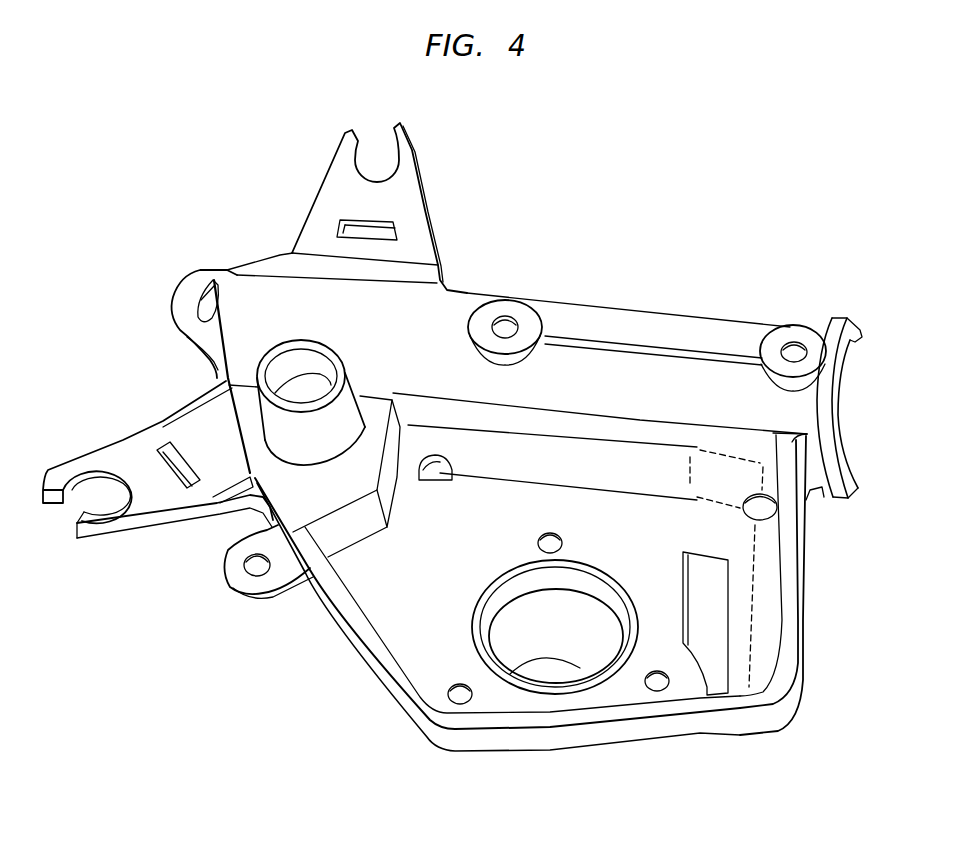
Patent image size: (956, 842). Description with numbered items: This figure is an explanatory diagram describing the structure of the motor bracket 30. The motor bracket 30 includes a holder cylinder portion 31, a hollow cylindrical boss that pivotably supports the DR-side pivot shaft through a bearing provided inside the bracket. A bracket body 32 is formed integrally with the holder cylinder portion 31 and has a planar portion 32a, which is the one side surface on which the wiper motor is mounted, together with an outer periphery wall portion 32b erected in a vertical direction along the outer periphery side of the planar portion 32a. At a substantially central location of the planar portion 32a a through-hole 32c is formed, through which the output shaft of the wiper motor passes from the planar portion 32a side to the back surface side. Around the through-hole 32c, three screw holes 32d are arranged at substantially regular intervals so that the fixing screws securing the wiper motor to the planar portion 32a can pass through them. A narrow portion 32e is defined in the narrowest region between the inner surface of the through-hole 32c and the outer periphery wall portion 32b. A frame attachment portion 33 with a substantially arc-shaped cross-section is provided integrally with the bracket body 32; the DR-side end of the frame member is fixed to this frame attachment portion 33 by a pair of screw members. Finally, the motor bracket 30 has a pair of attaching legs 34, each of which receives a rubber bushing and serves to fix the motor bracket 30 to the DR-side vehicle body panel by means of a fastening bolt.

The motor bracket 30 is at (647, 240).
The holder cylinder portion 31 is at (313, 437).
The bracket body 32 is at (387, 613).
The planar portion 32a is at (423, 652).
The outer periphery wall portion 32b is at (792, 620).
The through-hole 32c is at (560, 653).
The screw holes 32d is at (530, 545).
The narrow portion 32e is at (523, 700).
The frame attachment portion 33 is at (692, 317).
The attaching legs 34 is at (393, 192).